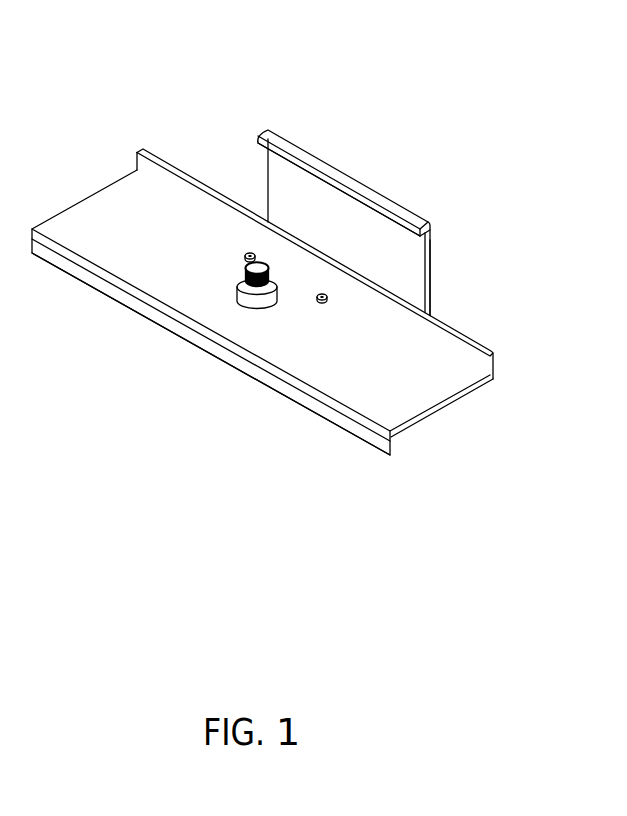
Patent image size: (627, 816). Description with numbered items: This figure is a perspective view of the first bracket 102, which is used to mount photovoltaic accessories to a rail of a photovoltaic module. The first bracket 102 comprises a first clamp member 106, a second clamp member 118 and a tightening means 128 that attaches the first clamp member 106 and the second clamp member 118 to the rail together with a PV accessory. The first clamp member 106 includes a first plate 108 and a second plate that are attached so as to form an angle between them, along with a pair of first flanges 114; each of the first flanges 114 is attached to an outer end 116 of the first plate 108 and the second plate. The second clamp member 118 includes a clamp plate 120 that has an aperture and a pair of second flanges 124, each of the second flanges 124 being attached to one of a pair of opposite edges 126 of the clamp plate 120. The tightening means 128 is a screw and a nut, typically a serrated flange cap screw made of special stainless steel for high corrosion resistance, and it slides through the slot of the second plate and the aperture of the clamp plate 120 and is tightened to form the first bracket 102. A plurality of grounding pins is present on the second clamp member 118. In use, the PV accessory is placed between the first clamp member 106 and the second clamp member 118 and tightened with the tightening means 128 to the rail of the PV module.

The first bracket 102 is at (362, 106).
The first clamp member 106 is at (436, 266).
The first plate 108 is at (277, 192).
The first flanges 114 is at (388, 204).
The outer end 116 is at (422, 232).
The second clamp member 118 is at (451, 412).
The clamp plate 120 is at (115, 215).
The second flanges 124 is at (366, 437).
The opposite edges 126 is at (396, 437).
The tightening means 128 is at (257, 300).